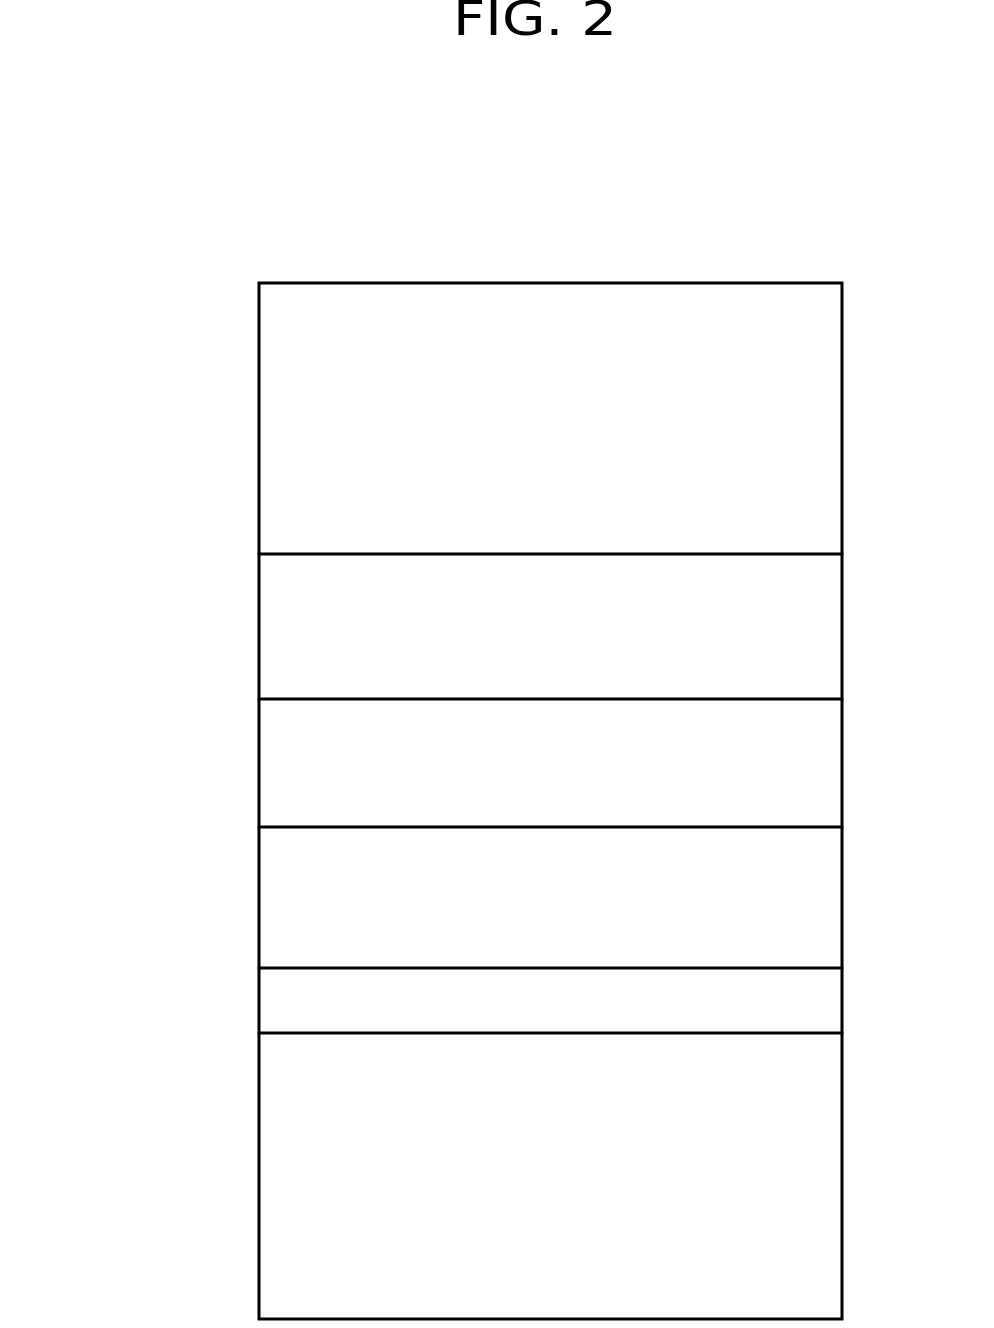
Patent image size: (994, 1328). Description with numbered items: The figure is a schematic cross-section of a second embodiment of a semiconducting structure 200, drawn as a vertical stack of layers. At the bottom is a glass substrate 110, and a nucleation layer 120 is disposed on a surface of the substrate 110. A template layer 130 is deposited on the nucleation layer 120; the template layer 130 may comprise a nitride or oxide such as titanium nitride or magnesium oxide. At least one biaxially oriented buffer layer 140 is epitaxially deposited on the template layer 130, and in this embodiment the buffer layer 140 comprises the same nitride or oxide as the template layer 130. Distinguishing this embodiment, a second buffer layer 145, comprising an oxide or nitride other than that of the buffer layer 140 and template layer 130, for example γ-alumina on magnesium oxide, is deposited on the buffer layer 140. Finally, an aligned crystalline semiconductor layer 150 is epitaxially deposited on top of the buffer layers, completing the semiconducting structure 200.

The semiconducting structure 200 is at (565, 180).
The glass substrate 110 is at (550, 1176).
The nucleation layer 120 is at (259, 1000).
The template layer 130 is at (550, 897).
The buffer layer 140 is at (550, 763).
The second buffer layer 145 is at (550, 626).
The aligned crystalline semiconductor layer 150 is at (550, 418).